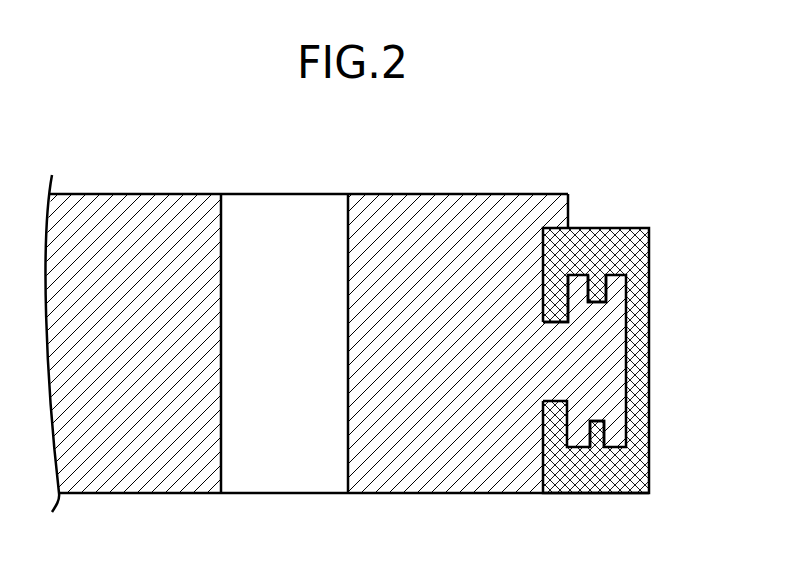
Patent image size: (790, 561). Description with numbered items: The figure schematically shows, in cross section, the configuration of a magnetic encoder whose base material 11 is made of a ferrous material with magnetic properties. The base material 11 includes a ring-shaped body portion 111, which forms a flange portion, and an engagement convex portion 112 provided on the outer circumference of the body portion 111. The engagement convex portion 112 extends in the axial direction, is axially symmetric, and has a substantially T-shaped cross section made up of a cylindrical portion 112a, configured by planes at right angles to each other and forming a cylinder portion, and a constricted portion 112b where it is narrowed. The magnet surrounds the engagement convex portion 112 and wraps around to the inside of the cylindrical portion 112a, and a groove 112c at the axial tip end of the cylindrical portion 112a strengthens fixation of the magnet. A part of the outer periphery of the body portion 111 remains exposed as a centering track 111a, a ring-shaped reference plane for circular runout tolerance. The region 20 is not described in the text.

The substrate / mounting board 20 is at (135, 213).
The base material 11 is at (432, 480).
The body portion 111 is at (167, 482).
The centering track 111a is at (570, 230).
The engagement convex portion 112 is at (547, 360).
The cylindrical portion 112a is at (613, 367).
The constricted portion 112b is at (556, 338).
The groove 112c is at (607, 320).